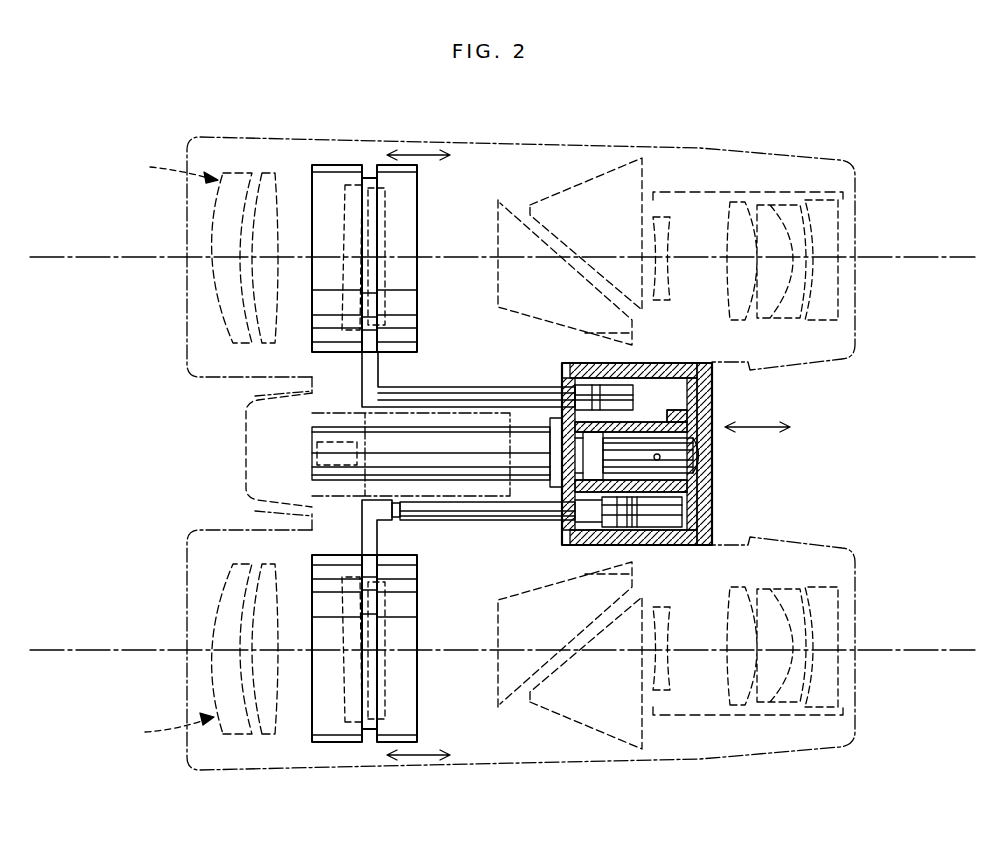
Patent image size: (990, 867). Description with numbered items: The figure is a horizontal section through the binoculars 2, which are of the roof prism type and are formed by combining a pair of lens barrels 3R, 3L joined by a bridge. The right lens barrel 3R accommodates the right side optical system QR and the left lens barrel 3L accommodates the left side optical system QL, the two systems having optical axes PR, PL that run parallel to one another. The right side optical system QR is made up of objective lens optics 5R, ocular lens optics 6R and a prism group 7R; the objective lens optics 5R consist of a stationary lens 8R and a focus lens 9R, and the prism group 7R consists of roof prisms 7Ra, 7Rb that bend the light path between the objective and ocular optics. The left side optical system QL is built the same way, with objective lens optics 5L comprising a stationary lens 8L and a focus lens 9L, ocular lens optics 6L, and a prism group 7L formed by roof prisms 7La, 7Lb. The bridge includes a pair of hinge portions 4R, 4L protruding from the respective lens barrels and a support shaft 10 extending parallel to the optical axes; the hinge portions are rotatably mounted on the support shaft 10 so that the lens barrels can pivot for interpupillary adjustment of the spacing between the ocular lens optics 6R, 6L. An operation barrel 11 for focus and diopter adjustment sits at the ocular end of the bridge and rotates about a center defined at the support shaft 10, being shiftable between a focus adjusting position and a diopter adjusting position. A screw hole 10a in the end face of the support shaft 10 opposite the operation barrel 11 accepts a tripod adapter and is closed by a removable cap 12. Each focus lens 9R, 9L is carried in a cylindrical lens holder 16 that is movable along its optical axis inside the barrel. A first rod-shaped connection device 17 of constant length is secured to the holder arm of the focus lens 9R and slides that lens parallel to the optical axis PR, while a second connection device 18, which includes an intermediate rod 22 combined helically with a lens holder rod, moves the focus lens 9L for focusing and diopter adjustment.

The binoculars 2 is at (885, 135).
The lens barrel 3R is at (697, 148).
The lens barrel 3L is at (702, 760).
The hinge portion 4R is at (255, 396).
The hinge portion 4L is at (255, 511).
The objective lens optics 5R is at (298, 202).
The objective lens optics 5L is at (298, 710).
The ocular lens optics 6R is at (754, 192).
The ocular lens optics 6L is at (754, 715).
The prism group 7R is at (562, 209).
The prism group 7L is at (564, 705).
The roof prism 7Ra is at (498, 200).
The roof prism 7Rb is at (586, 211).
The roof prism 7La is at (500, 705).
The roof prism 7Lb is at (586, 702).
The stationary lens 8R is at (240, 173).
The stationary lens 8L is at (238, 736).
The focus lens 9R is at (359, 216).
The focus lens 9L is at (358, 694).
The support shaft 10 is at (405, 476).
The screw hole 10a is at (317, 448).
The operation barrel 11 is at (712, 485).
The cap 12 is at (245, 463).
The lens holder 16 is at (418, 216).
The first connection device 17 is at (454, 387).
The second connection device 18 is at (475, 512).
The intermediate rod 22 is at (524, 512).
The optical axis PR is at (50, 257).
The optical axis PL is at (50, 650).
The right side optical system QR is at (165, 168).
The left side optical system QL is at (162, 731).